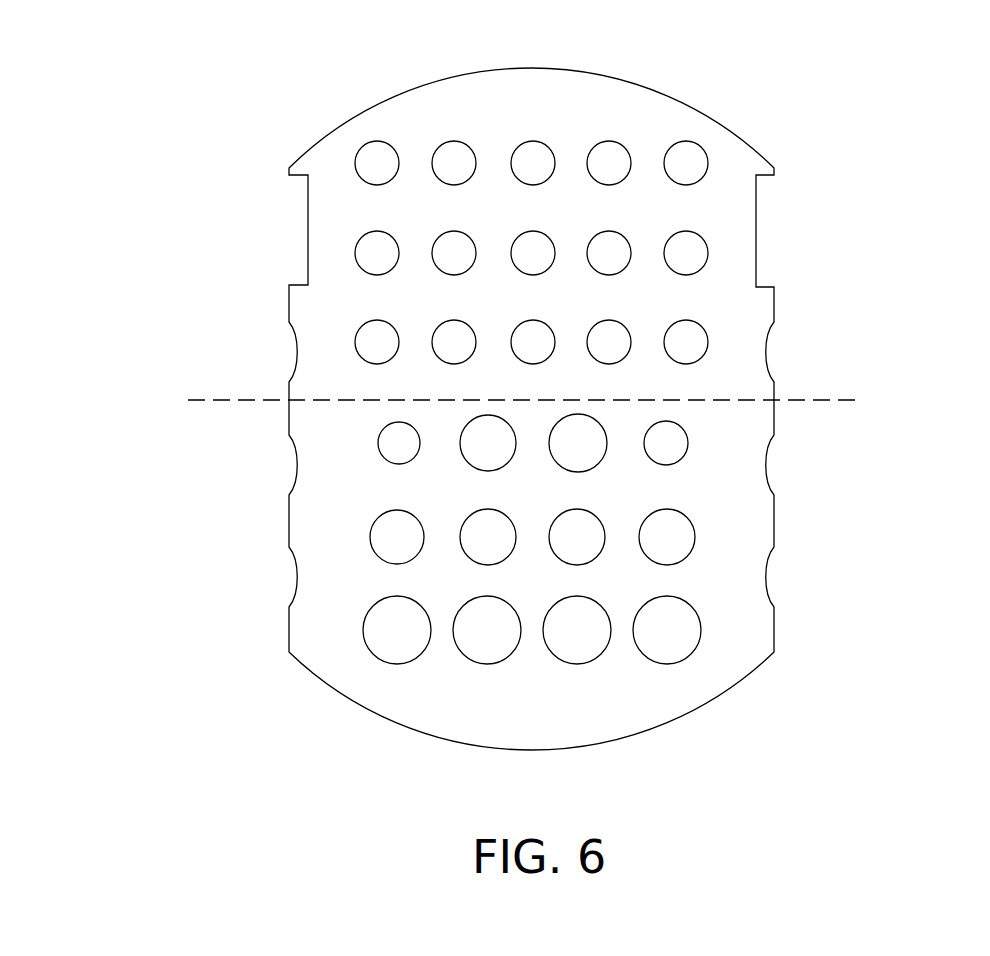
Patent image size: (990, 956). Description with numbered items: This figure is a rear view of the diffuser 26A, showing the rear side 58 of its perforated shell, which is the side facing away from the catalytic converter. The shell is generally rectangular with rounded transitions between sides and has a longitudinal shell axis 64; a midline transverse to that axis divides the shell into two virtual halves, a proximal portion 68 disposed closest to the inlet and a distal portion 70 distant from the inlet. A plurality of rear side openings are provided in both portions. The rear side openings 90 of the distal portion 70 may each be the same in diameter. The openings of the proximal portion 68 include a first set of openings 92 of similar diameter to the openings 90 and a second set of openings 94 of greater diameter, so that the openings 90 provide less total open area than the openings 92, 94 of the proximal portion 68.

The diffuser 26A is at (563, 414).
The rear side 58 is at (650, 128).
The longitudinal shell axis 64 is at (833, 400).
The proximal portion 68 is at (508, 539).
The distal portion 70 is at (508, 252).
The rear side openings 90 is at (690, 341).
The first set of openings 92 is at (665, 443).
The second set of openings 94 is at (665, 630).